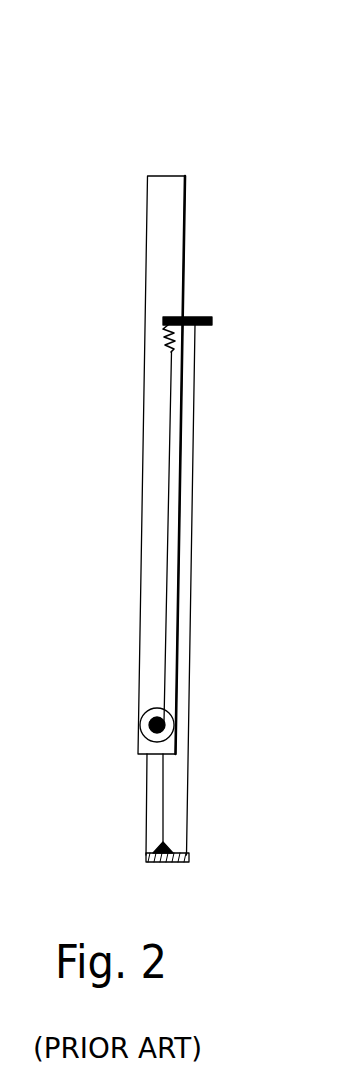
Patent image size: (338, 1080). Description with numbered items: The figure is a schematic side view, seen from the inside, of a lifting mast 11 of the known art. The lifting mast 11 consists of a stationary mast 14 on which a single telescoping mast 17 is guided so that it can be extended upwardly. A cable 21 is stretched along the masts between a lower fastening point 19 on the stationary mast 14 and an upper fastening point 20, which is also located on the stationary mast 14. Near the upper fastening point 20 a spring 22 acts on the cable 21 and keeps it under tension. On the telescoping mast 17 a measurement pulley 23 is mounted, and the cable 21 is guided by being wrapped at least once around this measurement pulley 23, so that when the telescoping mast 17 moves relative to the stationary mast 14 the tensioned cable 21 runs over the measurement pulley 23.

The lifting mast 11 is at (94, 118).
The stationary mast 14 is at (178, 794).
The telescoping mast 17 is at (152, 284).
The lower fastening point 19 is at (155, 845).
The upper fastening point 20 is at (163, 325).
The cable 21 is at (170, 411).
The spring 22 is at (165, 350).
The measurement pulley 23 is at (147, 722).